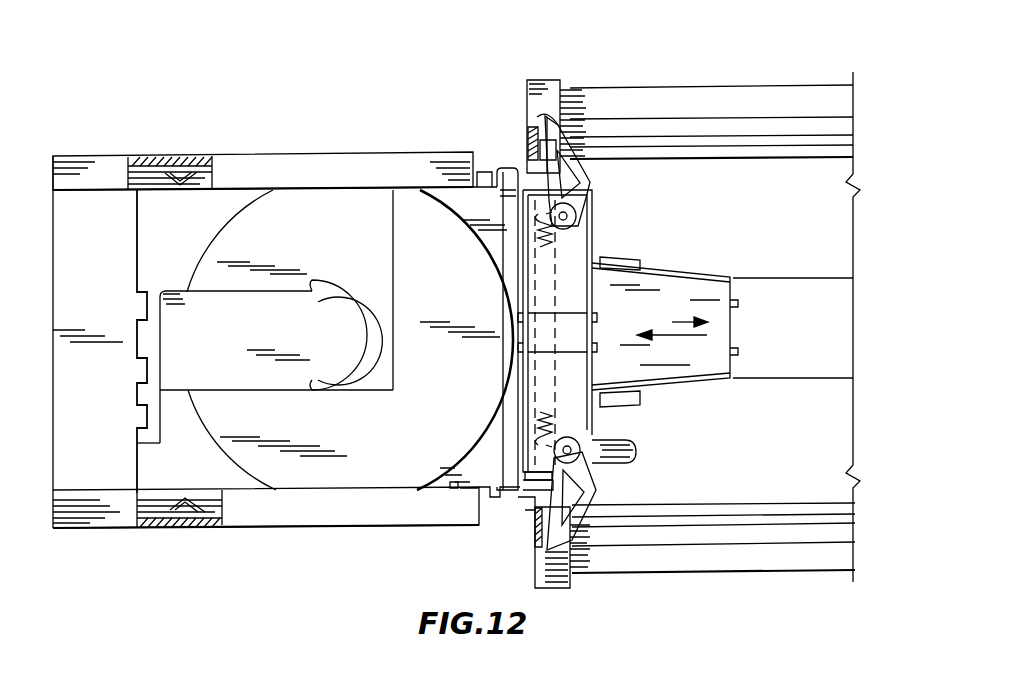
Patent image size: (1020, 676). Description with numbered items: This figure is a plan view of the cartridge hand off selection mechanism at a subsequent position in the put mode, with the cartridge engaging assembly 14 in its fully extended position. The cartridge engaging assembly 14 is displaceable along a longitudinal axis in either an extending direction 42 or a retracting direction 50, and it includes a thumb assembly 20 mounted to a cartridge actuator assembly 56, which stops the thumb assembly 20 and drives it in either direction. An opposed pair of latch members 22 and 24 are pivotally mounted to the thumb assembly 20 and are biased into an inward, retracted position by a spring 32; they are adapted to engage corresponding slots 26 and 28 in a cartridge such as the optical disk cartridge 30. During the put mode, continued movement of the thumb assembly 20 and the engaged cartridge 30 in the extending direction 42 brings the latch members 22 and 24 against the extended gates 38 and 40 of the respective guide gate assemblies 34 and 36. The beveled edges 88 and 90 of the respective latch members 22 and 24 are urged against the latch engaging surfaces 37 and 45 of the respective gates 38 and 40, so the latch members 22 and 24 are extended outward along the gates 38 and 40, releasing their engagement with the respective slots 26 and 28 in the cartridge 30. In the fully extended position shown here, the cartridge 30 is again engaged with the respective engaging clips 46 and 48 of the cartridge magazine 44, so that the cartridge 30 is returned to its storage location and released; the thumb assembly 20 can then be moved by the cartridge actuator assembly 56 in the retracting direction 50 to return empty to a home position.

The cartridge engaging assembly 14 is at (722, 78).
The thumb assembly 20 is at (600, 221).
The latch member 22 is at (590, 182).
The latch member 24 is at (596, 488).
The slot 26 is at (493, 178).
The slot 28 is at (493, 503).
The optical disk cartridge 30 is at (130, 287).
The spring 32 is at (550, 245).
The guide gate assembly 34 is at (550, 72).
The guide gate assembly 36 is at (570, 597).
The latch engaging surface 37 is at (567, 138).
The extended gate 38 is at (533, 156).
The extended gate 40 is at (530, 507).
The extending direction 42 is at (672, 337).
The cartridge magazine 44 is at (336, 145).
The latch engaging surface 45 is at (552, 488).
The engaging clip 46 is at (200, 157).
The engaging clip 48 is at (186, 528).
The retracting direction 50 is at (670, 320).
The cartridge actuator assembly 56 is at (702, 400).
The beveled edge 88 is at (546, 117).
The beveled edge 90 is at (547, 552).